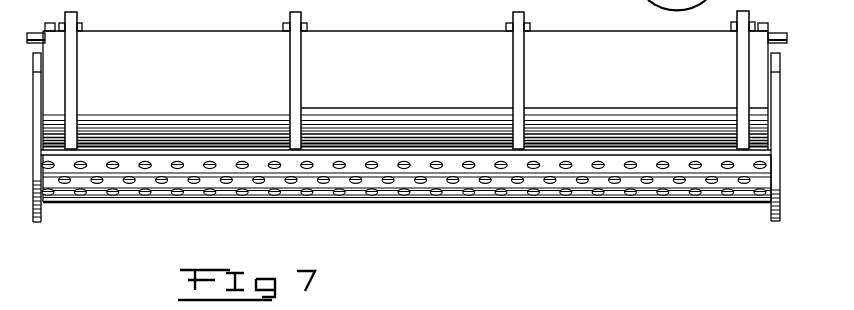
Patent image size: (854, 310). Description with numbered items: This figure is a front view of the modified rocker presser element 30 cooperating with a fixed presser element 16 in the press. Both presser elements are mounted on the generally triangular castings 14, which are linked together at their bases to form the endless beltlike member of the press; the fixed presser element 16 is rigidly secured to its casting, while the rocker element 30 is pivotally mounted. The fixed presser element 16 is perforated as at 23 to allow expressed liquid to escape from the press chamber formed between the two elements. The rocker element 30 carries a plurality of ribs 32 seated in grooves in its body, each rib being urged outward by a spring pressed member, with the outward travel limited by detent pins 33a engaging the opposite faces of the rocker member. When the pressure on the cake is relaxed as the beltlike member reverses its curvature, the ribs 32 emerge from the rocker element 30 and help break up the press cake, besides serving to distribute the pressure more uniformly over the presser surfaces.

The casting 14 is at (45, 222).
The fixed presser element 16 is at (378, 198).
The perforations 23 is at (520, 201).
The rocker presser element 30 is at (405, 90).
The rib 32 is at (297, 103).
The pin 33a is at (82, 27).